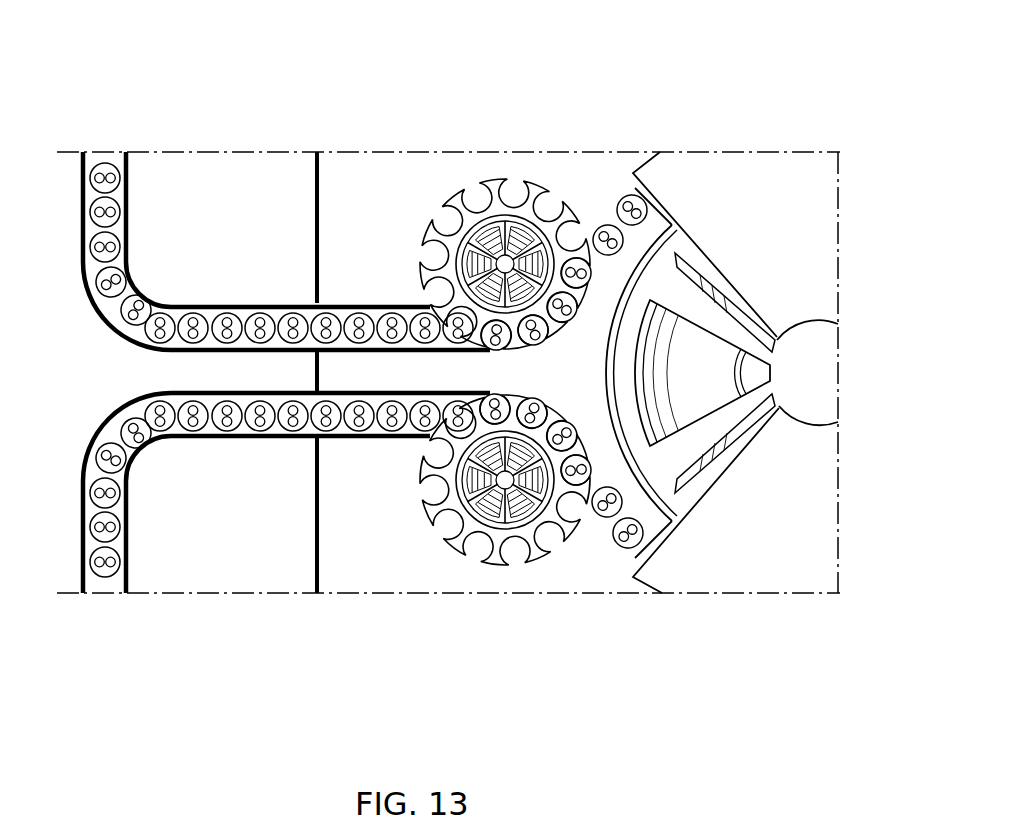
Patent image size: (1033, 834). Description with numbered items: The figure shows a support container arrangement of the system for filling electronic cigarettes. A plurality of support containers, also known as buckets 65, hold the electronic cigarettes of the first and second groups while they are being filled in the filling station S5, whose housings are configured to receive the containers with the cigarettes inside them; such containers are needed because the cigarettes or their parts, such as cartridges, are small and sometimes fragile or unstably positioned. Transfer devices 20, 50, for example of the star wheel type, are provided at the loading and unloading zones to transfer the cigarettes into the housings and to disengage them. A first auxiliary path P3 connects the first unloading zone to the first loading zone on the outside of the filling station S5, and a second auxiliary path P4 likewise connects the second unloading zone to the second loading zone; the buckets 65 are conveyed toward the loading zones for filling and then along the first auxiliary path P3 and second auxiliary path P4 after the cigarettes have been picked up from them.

The first auxiliary path P3 is at (222, 298).
The second auxiliary path P4 is at (366, 443).
The transfer device 20 is at (476, 181).
The transfer device 50 is at (552, 536).
The support container 65 is at (120, 249).
The filling station S5 is at (732, 224).